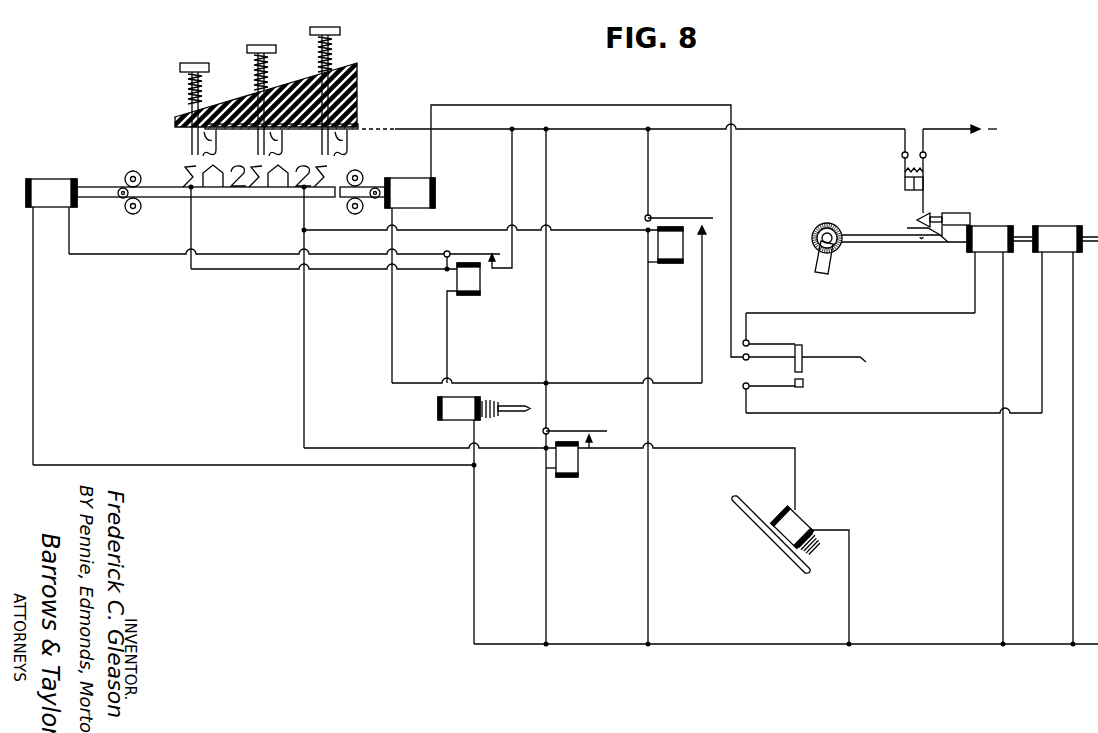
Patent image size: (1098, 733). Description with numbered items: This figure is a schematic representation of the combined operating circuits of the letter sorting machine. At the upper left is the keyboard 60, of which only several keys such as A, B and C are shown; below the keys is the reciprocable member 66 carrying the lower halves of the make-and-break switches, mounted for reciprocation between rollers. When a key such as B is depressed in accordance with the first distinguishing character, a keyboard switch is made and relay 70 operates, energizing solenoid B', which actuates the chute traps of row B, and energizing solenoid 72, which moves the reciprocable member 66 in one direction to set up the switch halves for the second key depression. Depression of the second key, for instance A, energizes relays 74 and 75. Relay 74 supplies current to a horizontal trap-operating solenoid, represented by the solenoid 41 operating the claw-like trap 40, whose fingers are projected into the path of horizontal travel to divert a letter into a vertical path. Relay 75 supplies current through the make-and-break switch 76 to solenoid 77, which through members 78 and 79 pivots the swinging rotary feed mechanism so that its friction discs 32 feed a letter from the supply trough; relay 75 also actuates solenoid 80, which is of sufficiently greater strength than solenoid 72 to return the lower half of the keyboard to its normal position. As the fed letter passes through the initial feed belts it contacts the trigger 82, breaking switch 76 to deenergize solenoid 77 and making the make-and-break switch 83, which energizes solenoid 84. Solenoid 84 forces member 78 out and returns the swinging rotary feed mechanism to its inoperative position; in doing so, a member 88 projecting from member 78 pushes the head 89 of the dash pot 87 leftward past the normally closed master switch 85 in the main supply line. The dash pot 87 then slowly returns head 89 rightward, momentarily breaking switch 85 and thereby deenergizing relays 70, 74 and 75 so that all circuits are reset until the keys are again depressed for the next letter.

The keyboard 60 is at (170, 74).
The key A is at (261, 44).
The key B is at (194, 95).
The key C is at (326, 26).
The solenoid 72 is at (46, 183).
The reciprocable member 66 is at (258, 190).
The solenoid 80 is at (408, 178).
The relay 70 is at (480, 283).
The relay 75 is at (658, 243).
The solenoid B' is at (484, 408).
The relay 74 is at (580, 463).
The friction discs 32 is at (818, 226).
The member 79 is at (873, 242).
The member 78 is at (948, 243).
The make-and-break switch 85 is at (924, 182).
The head 89 is at (915, 218).
The member 88 is at (907, 228).
The dash pot 87 is at (954, 213).
The solenoid 77 is at (995, 226).
The solenoid 84 is at (1059, 226).
The make-and-break switch 76 is at (802, 350).
The trigger 82 is at (843, 352).
The make-and-break switch 83 is at (803, 383).
The claw-like trap 40 is at (745, 500).
The solenoid 41 is at (811, 516).